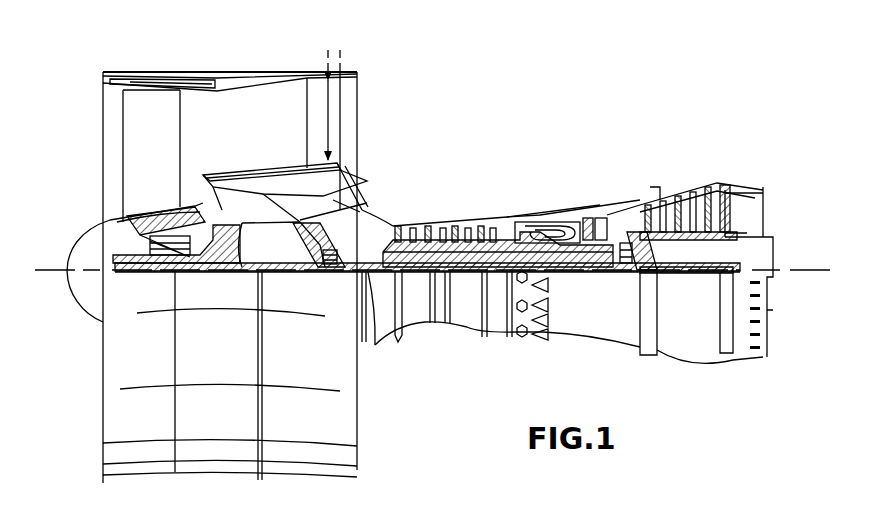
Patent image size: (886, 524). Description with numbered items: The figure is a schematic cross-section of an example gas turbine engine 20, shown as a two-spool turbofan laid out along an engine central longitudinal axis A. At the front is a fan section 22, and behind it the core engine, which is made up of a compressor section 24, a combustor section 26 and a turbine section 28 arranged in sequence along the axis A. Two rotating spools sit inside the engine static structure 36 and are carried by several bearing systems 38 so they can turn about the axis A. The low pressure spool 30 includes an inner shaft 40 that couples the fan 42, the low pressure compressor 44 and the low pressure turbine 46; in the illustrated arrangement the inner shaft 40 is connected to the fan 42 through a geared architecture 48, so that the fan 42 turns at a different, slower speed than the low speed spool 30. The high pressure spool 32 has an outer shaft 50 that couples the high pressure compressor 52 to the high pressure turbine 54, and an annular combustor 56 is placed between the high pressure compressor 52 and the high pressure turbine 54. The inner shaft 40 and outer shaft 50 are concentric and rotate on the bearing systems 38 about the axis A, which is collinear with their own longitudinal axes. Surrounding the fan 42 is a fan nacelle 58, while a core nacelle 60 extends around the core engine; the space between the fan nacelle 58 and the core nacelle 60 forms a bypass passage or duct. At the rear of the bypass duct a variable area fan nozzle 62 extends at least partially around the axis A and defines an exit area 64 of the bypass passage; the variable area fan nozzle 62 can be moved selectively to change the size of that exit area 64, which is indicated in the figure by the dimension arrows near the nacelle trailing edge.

The gas turbine engine 20 is at (556, 106).
The fan section 22 is at (180, 66).
The compressor section 24 is at (394, 206).
The combustor section 26 is at (550, 196).
The turbine section 28 is at (655, 170).
The low pressure spool 30 is at (468, 279).
The high pressure spool 32 is at (498, 232).
The engine static structure 36 is at (497, 339).
The bearing systems 38 is at (328, 266).
The inner shaft 40 is at (375, 328).
The fan 42 is at (167, 164).
The low pressure compressor 44 is at (352, 172).
The low pressure turbine 46 is at (687, 187).
The geared architecture 48 is at (233, 264).
The outer shaft 50 is at (558, 272).
The high pressure compressor 52 is at (449, 225).
The high pressure turbine 54 is at (603, 198).
The annular combustor 56 is at (548, 231).
The fan nacelle 58 is at (205, 72).
The core nacelle 60 is at (288, 166).
The variable area fan nozzle 62 is at (352, 94).
The exit area 64 is at (335, 123).
The engine central longitudinal axis A is at (827, 268).